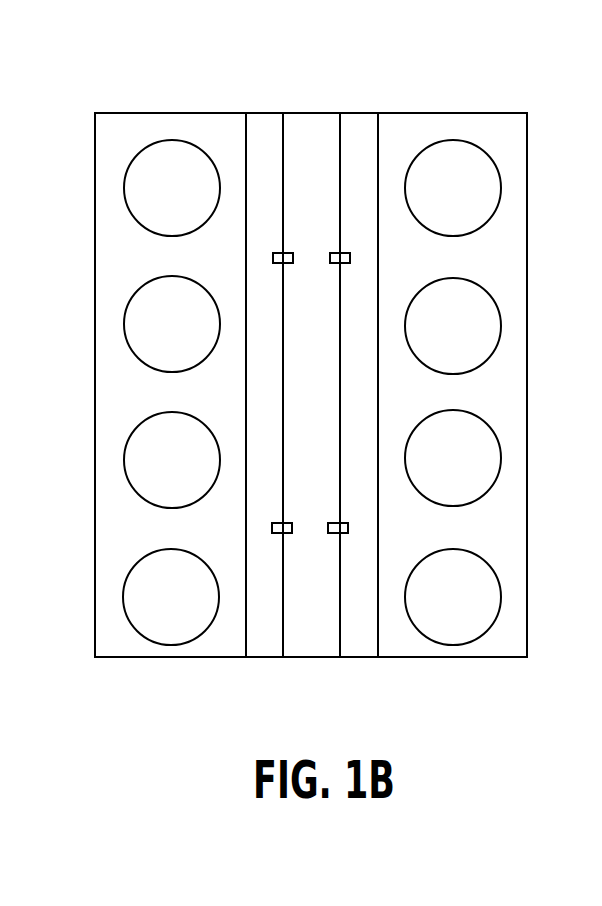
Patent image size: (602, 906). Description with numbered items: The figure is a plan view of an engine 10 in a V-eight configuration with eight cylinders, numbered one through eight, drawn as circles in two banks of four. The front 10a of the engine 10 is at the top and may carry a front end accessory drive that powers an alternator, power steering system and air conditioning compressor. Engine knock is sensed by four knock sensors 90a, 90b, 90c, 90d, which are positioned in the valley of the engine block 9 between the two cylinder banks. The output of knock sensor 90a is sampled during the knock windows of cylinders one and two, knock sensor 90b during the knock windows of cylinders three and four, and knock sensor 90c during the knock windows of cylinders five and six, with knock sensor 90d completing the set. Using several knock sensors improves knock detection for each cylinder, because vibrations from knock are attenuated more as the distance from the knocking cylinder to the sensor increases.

The engine block 9 is at (176, 693).
The engine 10 is at (134, 113).
The front of engine 10a is at (306, 74).
The knock sensor 90a is at (350, 257).
The knock sensor 90b is at (348, 527).
The knock sensor 90c is at (287, 254).
The knock sensor 90d is at (286, 524).